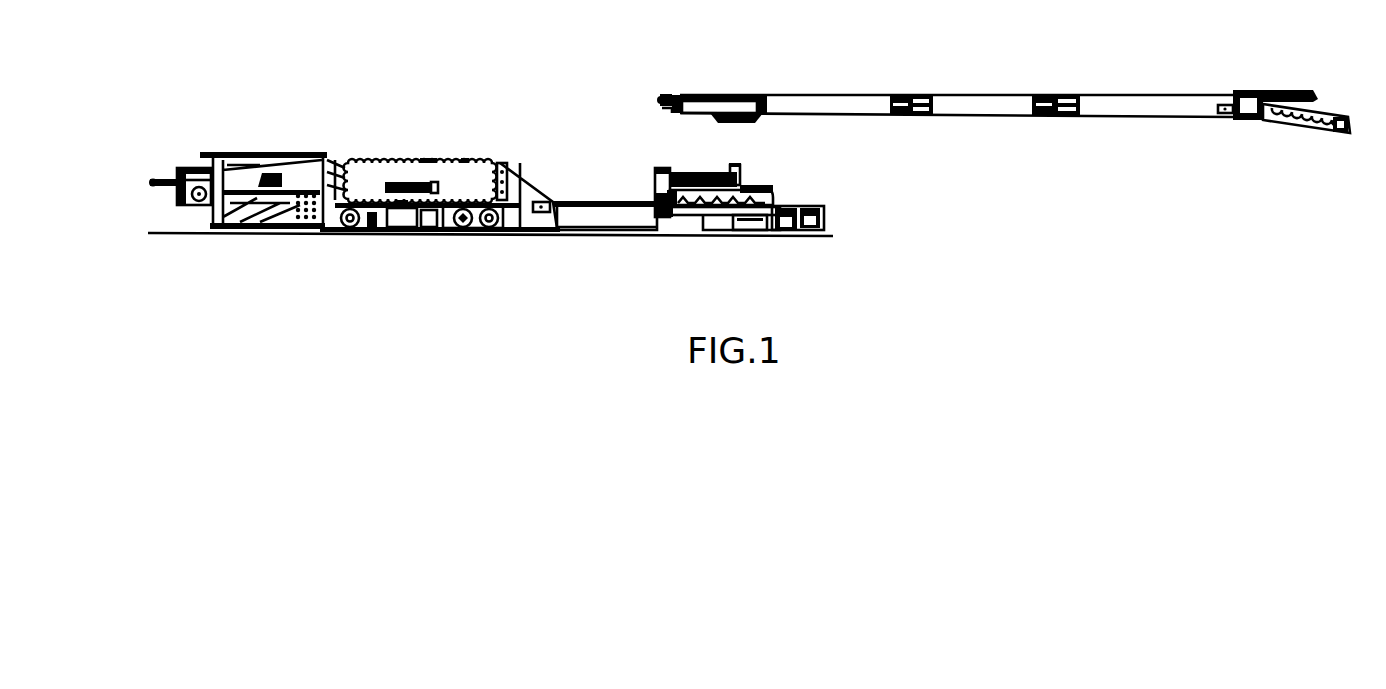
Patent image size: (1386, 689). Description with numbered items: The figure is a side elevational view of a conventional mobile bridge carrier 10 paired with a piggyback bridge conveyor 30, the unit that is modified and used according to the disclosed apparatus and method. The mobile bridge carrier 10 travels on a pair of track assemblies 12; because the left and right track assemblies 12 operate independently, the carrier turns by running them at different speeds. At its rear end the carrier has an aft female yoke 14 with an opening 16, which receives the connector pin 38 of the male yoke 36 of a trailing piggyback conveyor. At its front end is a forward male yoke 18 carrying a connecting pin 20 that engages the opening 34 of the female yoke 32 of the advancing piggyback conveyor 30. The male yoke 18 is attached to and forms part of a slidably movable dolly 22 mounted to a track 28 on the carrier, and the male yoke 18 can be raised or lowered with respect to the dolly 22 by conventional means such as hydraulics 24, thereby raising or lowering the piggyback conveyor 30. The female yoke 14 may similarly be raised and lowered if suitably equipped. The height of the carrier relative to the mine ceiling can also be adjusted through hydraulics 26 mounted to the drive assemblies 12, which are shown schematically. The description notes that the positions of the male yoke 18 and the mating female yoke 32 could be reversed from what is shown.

The mobile bridge carrier 10 is at (400, 162).
The track assemblies 12 is at (367, 232).
The aft female yoke 14 is at (156, 182).
The opening 16 is at (156, 180).
The forward male yoke 18 is at (740, 183).
The connecting pin 20 is at (742, 162).
The slidably movable dolly 22 is at (717, 216).
The hydraulics 24 is at (763, 230).
The hydraulics 26 is at (412, 222).
The track 28 is at (583, 202).
The piggyback bridge conveyor 30 is at (1124, 116).
The female yoke 32 is at (672, 110).
The opening 34 is at (666, 95).
The male yoke 36 is at (1270, 90).
The connector pin 38 is at (1310, 102).